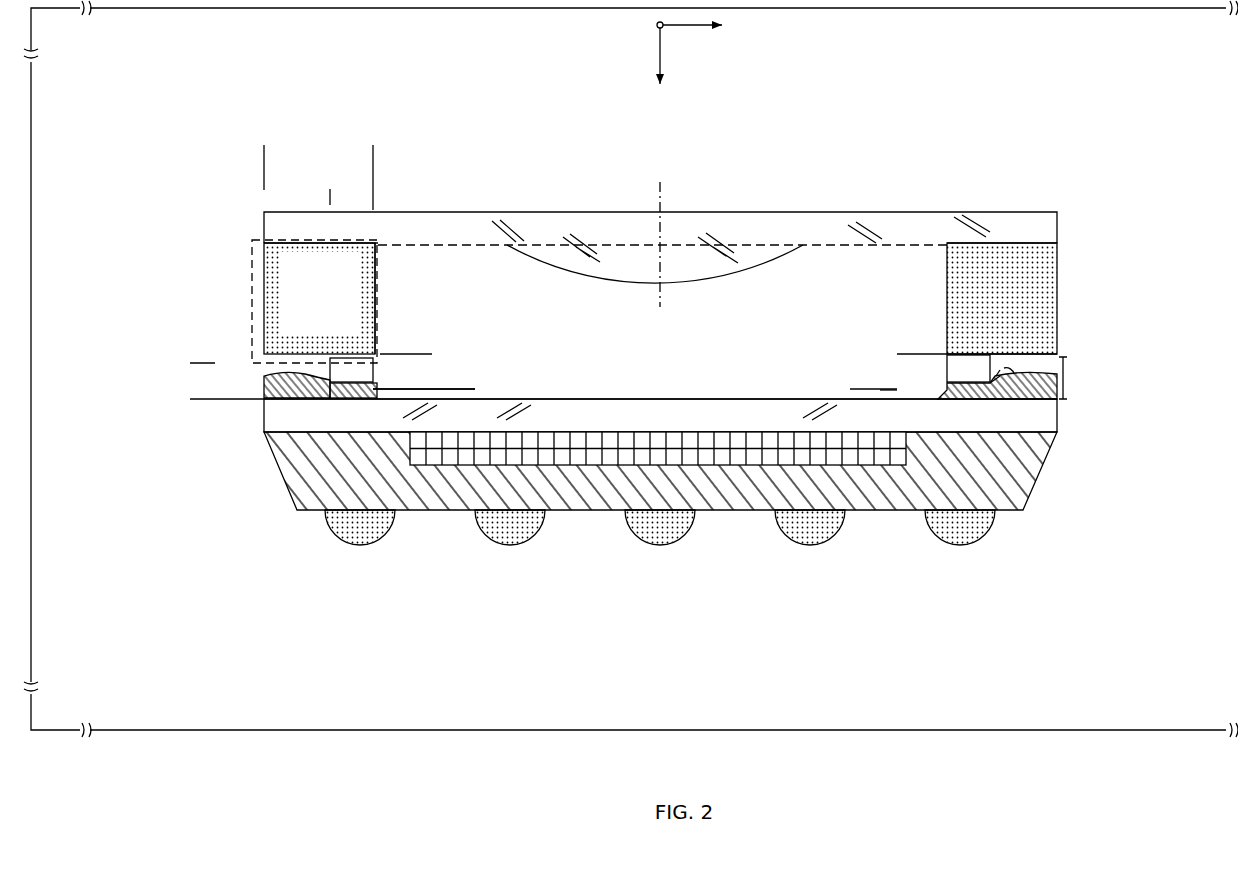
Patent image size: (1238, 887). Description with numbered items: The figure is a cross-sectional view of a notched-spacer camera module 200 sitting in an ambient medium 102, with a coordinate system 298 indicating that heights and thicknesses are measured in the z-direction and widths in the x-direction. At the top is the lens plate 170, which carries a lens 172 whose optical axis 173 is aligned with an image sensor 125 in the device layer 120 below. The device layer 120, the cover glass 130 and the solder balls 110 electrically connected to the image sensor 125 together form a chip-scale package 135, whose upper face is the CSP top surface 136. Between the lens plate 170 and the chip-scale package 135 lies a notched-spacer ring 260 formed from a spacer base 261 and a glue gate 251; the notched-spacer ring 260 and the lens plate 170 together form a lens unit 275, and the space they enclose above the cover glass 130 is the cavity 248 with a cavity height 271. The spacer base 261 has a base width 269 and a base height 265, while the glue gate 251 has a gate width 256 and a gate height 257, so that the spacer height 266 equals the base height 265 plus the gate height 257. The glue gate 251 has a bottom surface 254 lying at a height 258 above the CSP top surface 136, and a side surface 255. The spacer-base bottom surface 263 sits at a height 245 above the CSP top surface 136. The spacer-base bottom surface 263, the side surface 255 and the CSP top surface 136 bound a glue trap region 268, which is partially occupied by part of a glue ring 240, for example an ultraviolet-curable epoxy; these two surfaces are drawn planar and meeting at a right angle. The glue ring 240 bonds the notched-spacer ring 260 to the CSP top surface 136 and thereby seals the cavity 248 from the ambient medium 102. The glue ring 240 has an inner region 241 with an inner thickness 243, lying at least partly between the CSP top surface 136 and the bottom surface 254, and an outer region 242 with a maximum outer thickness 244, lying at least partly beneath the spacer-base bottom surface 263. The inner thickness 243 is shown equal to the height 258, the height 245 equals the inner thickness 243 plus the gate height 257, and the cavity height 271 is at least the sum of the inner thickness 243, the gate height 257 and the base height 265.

The ambient medium 102 is at (631, 369).
The notched-spacer camera module 200 is at (205, 152).
The coordinate system 298 is at (702, 68).
The lens plate 170 is at (660, 237).
The lens 172 is at (641, 283).
The optical axis 173 is at (660, 195).
The spacer base 261 is at (660, 298).
The lens unit 275 is at (327, 363).
The notched-spacer ring 260 is at (376, 298).
The cavity 248 is at (658, 339).
The glue gate 251 is at (660, 368).
The glue ring 240 is at (1123, 466).
The inner region 241 is at (375, 402).
The outer region 242 is at (328, 402).
The cover glass 130 is at (660, 415).
The CSP top surface 136 is at (639, 394).
The device layer 120 is at (660, 471).
The image sensor 125 is at (658, 448).
The solder balls 110 is at (660, 527).
The chip-scale package 135 is at (255, 405).
The base width 269 is at (373, 165).
The gate width 256 is at (304, 197).
The cavity height 271 is at (823, 245).
The spacer height 266 is at (873, 245).
The base height 265 is at (920, 243).
The height 245 is at (920, 413).
The gate height 257 is at (405, 335).
The inner thickness 243 is at (450, 420).
The height 258 is at (444, 366).
The maximum outer thickness 244 is at (202, 345).
The spacer-base bottom surface 263 is at (1048, 349).
The glue trap region 268 is at (1063, 362).
The bottom surface 254 is at (980, 404).
The side surface 255 is at (1035, 390).